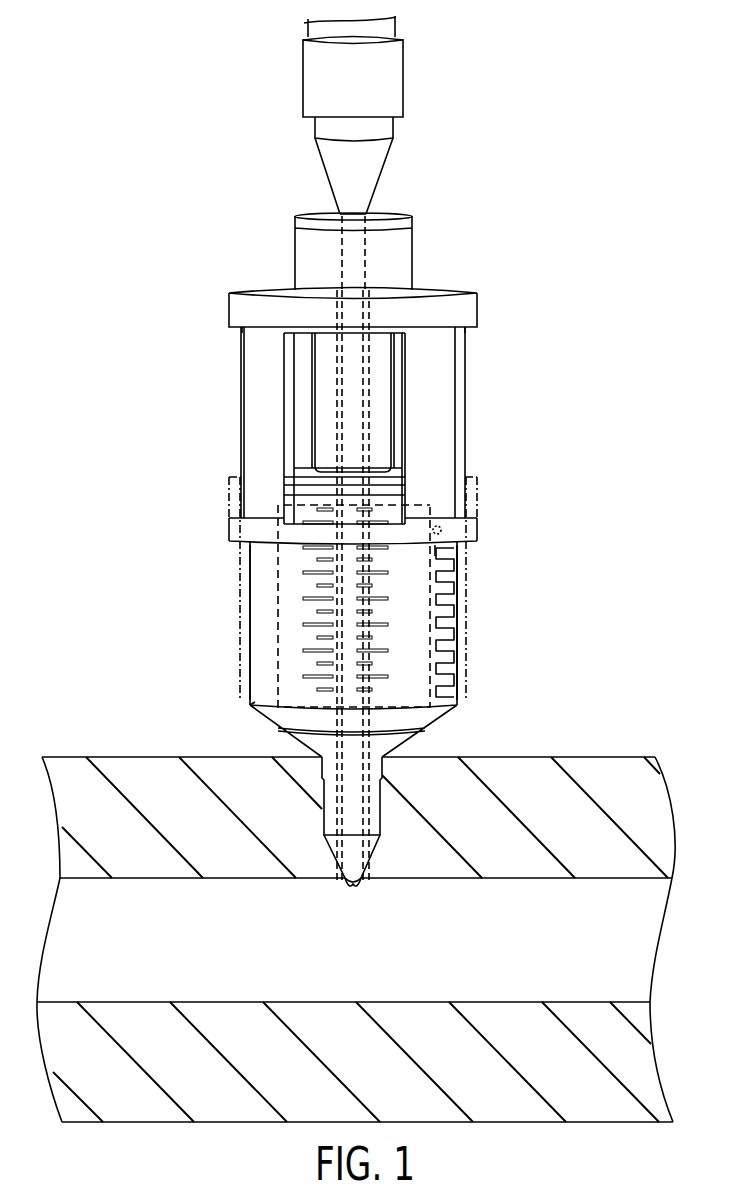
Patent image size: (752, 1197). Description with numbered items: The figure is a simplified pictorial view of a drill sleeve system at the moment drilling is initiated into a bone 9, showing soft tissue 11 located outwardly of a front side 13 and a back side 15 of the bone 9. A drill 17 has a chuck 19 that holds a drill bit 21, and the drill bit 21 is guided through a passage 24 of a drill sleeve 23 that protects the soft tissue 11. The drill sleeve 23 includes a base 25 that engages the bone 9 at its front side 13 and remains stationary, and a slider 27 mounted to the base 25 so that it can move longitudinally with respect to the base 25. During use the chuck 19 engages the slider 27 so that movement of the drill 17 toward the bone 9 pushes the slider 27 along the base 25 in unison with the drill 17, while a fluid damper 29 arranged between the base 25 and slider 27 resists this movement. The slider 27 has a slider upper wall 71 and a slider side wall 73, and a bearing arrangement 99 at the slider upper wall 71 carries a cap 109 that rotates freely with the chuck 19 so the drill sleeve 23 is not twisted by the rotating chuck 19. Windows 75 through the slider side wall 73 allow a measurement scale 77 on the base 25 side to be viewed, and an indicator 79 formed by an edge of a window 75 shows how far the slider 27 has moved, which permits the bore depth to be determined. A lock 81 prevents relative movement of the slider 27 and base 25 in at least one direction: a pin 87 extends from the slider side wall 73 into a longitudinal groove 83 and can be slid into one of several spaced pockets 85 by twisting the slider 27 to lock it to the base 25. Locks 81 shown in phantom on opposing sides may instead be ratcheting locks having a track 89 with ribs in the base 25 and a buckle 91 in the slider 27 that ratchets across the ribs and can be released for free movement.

The drill 17 is at (413, 28).
The chuck 19 is at (373, 158).
The cap 109 is at (327, 212).
The bearing arrangement 99 is at (413, 238).
The slider upper wall 71 is at (278, 285).
The slider 27 is at (480, 300).
The slider side wall 73 is at (447, 362).
The windows 75 is at (312, 385).
The passage 24 is at (372, 418).
The indicator 79 is at (298, 524).
The drill sleeve 23 is at (216, 524).
The buckle 91 is at (226, 493).
The pin 87 is at (441, 530).
The groove 83 is at (452, 553).
The lock 81 is at (236, 575).
The track 89 is at (240, 620).
The measurement scale 77 is at (300, 577).
The pockets 85 is at (450, 667).
The fluid damper 29 is at (280, 676).
The base 25 is at (464, 688).
The soft tissue 11 is at (603, 778).
The front side 13 is at (633, 876).
The bone 9 is at (664, 937).
The back side 15 is at (621, 1006).
The drill bit 21 is at (363, 890).